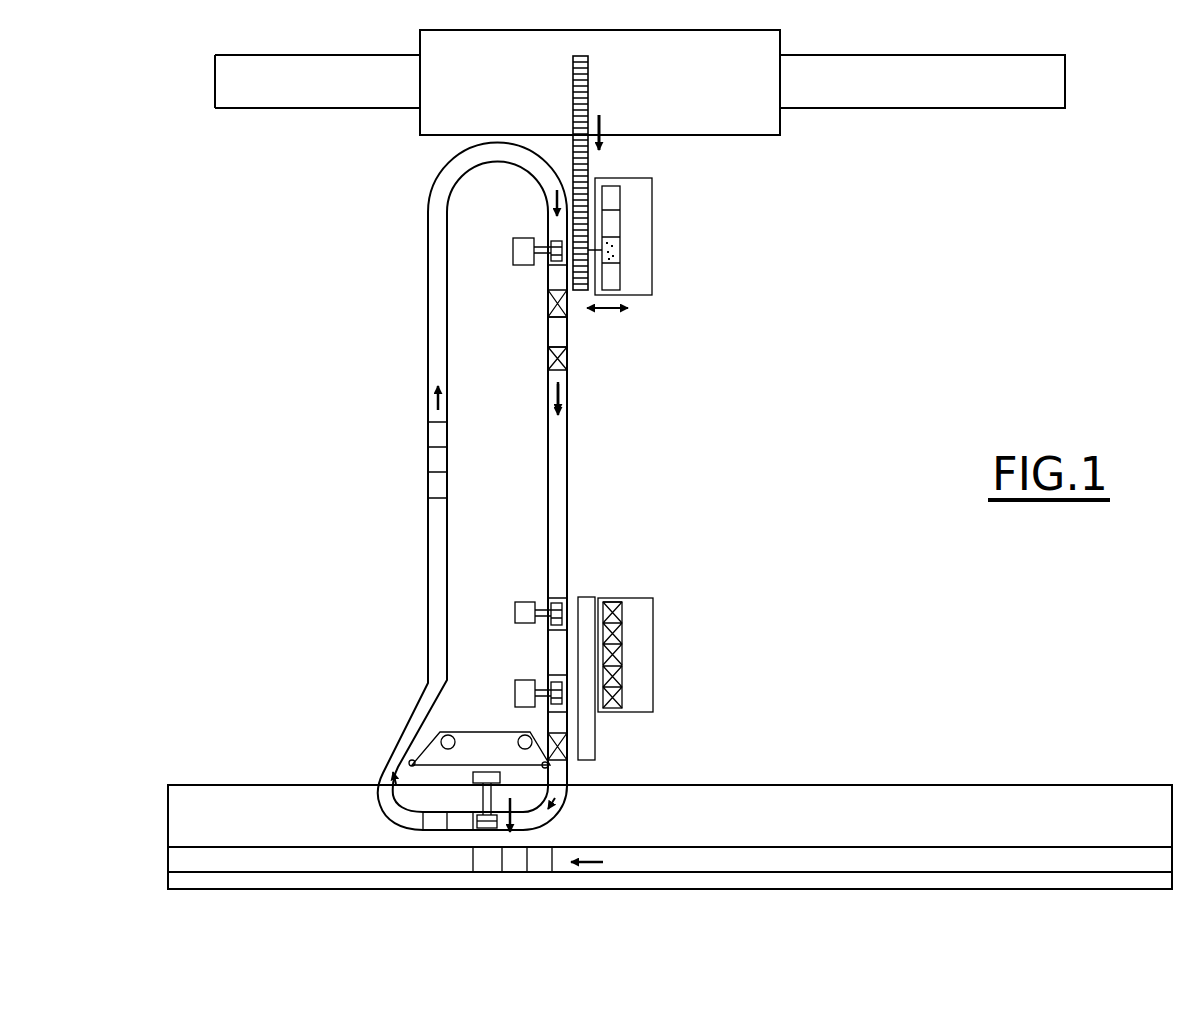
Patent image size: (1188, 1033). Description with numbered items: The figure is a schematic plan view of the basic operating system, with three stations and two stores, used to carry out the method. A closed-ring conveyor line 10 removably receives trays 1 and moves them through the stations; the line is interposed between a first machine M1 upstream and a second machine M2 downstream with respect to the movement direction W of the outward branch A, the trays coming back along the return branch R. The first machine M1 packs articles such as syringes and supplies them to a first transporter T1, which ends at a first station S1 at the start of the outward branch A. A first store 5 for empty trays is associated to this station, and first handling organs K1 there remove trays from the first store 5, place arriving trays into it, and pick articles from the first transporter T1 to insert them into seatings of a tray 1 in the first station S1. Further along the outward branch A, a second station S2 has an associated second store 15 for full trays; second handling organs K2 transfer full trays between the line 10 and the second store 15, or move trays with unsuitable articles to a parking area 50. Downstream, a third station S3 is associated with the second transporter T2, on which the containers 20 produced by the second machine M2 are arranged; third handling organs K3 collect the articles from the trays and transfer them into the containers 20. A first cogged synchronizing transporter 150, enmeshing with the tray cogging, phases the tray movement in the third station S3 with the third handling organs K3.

The first transporter T1 is at (581, 88).
The first machine M1 is at (763, 118).
The first handling organs K1 is at (511, 226).
The first store 5 is at (670, 238).
The first station S1 is at (530, 284).
The closed-ring conveyor line 10 is at (437, 353).
The tray 1 is at (561, 331).
The movement direction W is at (561, 394).
The outward branch A is at (579, 452).
The return branch R is at (418, 514).
The second handling organs K2 is at (524, 590).
The cogging 50 is at (586, 598).
The second store 15 is at (668, 610).
The second station S2 is at (536, 650).
The first cogged synchronizing transporter 150 is at (497, 730).
The third handling organs K3 is at (473, 773).
The third station S3 is at (461, 798).
The container 20 is at (541, 855).
The second machine M2 is at (807, 775).
The second transporter T2 is at (863, 865).